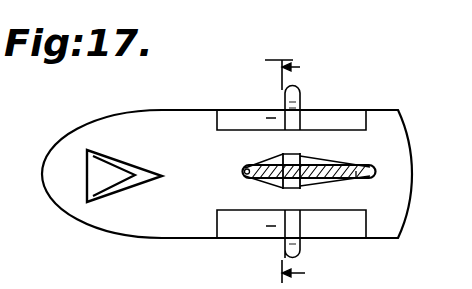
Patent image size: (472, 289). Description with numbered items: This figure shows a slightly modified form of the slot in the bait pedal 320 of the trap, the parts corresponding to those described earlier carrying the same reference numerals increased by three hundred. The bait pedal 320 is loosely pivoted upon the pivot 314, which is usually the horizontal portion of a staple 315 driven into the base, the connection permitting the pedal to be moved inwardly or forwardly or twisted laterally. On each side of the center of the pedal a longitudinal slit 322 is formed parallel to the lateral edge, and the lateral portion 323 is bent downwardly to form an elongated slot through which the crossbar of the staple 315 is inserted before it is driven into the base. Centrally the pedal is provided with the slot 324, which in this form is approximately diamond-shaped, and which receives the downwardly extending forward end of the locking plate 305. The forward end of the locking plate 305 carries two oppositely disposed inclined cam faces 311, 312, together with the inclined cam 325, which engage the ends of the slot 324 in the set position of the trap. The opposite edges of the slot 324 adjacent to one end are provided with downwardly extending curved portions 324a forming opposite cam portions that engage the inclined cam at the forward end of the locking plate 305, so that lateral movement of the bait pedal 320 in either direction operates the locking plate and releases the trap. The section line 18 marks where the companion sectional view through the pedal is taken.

The bait pedal 320 is at (157, 100).
The inclined cam face 325 is at (103, 175).
The longitudinal slit 322 is at (248, 130).
The lateral portion 323 is at (273, 123).
The staple 315 is at (298, 92).
The pivot 314 is at (310, 113).
The section line 18 is at (299, 162).
The slot 324 is at (323, 155).
The downwardly extending curved portion 324a is at (280, 158).
The inclined cam face 312 is at (375, 170).
The inclined cam face 311 is at (243, 173).
The locking plate 305 is at (352, 177).